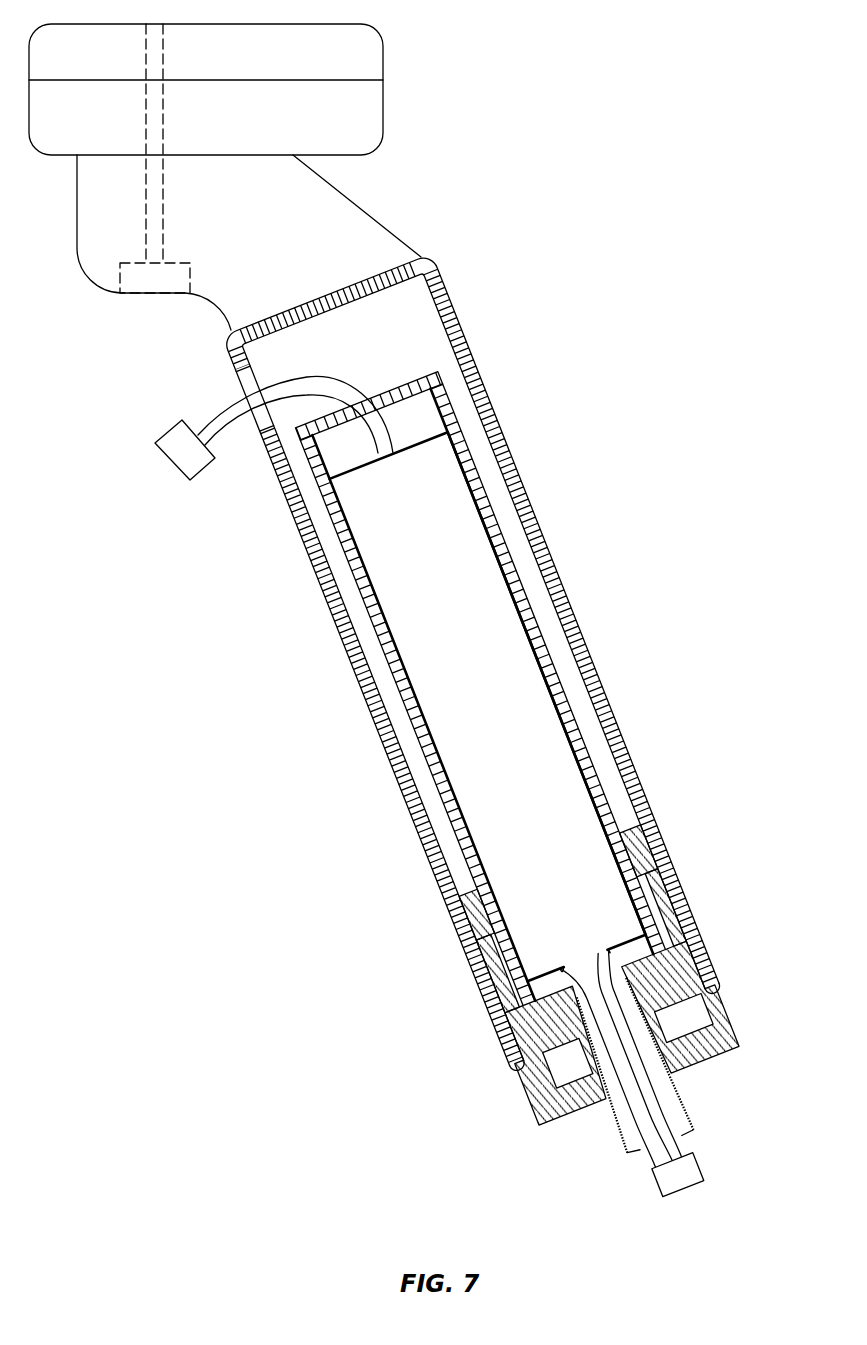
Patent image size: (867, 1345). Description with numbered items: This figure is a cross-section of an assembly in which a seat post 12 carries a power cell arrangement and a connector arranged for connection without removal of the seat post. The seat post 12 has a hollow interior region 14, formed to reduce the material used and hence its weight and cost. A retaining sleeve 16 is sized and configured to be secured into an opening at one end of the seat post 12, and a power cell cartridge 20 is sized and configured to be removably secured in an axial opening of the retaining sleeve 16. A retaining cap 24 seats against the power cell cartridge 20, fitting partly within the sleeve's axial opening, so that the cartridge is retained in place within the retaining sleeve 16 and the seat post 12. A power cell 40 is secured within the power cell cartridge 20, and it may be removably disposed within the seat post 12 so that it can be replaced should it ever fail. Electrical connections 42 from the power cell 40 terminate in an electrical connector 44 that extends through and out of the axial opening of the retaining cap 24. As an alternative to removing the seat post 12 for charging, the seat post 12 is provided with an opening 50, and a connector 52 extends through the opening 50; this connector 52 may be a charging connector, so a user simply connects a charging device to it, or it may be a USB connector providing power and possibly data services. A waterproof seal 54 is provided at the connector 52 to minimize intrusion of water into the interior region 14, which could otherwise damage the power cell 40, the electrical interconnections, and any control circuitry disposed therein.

The seat post 12 is at (473, 357).
The hollow interior region 14 is at (390, 313).
The retaining sleeve 16 is at (643, 853).
The power cell cartridge 20 is at (557, 663).
The retaining cap 24 is at (657, 1003).
The power cell 40 is at (540, 768).
The electrical connections 42 is at (680, 1147).
The electrical connector 44 is at (683, 1183).
The opening 50 is at (230, 380).
The connector 52 is at (205, 478).
The waterproof seal 54 is at (247, 388).